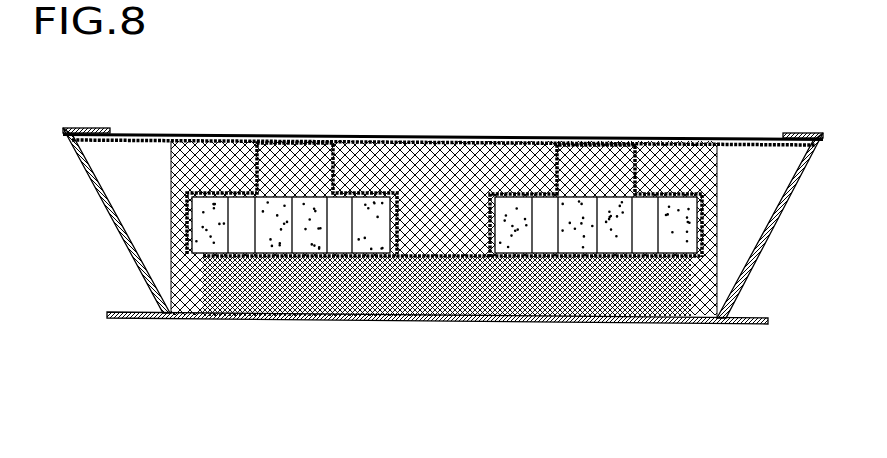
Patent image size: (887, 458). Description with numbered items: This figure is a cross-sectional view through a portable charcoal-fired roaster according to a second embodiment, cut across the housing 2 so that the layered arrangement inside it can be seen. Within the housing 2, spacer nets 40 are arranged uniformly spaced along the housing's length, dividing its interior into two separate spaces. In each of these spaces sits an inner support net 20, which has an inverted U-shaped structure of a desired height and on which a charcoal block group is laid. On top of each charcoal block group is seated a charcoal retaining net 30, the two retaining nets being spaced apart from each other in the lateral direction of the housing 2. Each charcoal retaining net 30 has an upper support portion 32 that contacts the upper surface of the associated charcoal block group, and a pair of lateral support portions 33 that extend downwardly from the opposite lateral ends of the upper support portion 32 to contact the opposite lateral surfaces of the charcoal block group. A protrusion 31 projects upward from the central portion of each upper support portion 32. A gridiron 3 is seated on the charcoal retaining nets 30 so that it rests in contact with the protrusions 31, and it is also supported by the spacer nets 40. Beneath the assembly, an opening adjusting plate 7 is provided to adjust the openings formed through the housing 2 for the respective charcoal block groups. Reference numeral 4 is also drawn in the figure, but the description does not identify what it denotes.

The housing 2 is at (110, 212).
The gridiron 3 is at (733, 142).
The semiconductor chip 4 is at (215, 217).
The opening adjusting plate 7 is at (750, 324).
The inner support net 20 is at (597, 258).
The charcoal retaining net 30 is at (663, 163).
The protrusion 31 is at (638, 192).
The upper support portion 32 is at (508, 193).
The lateral support portions 33 is at (712, 233).
The spacer net 40 is at (192, 173).